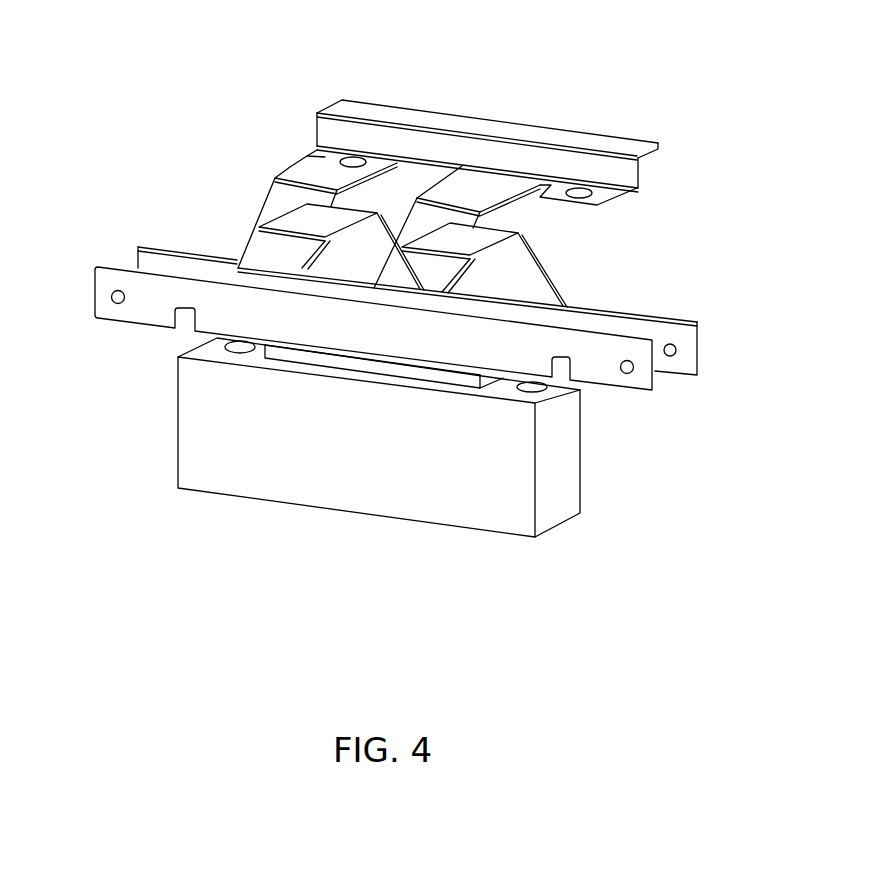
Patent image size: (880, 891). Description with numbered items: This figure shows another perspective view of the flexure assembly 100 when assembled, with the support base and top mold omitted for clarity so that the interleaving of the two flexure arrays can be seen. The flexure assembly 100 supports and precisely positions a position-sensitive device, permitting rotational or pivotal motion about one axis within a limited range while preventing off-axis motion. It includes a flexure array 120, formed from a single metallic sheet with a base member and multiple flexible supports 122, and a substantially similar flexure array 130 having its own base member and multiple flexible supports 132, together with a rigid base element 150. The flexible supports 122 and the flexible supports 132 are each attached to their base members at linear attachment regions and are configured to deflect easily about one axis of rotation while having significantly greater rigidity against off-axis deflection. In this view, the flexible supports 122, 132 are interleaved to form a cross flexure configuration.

The flexure assembly 100 is at (135, 88).
The flexure array 120 is at (697, 322).
The flexible supports 122 is at (343, 207).
The flexure array 130 is at (655, 392).
The flexible supports 132 is at (292, 172).
The rigid base element 150 is at (400, 446).